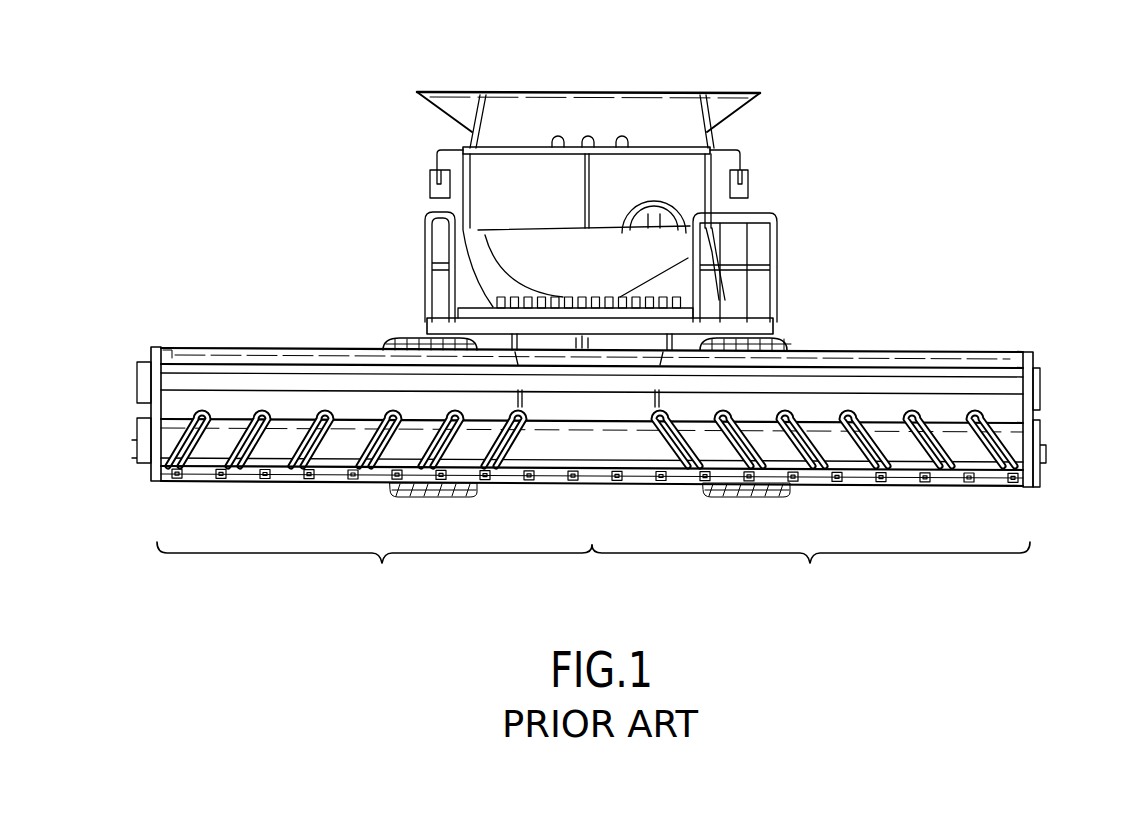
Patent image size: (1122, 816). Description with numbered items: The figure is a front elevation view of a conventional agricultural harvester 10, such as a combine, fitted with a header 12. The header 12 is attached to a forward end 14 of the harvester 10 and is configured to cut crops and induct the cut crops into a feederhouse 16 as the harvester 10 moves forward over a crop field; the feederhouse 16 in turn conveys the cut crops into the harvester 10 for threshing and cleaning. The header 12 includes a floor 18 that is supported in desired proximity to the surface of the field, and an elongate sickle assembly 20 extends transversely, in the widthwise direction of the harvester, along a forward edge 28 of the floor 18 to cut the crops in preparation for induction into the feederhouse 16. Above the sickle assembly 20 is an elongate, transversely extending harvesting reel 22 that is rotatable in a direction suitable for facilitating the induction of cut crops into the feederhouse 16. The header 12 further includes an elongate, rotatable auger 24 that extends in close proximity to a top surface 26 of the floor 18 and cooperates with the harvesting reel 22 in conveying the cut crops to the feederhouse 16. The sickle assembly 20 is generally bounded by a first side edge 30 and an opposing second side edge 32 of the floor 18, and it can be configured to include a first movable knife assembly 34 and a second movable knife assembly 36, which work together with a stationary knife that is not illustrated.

The agricultural harvester 10 is at (275, 108).
The header 12 is at (136, 384).
The forward end 14 is at (435, 327).
The feederhouse 16 is at (672, 343).
The floor 18 is at (273, 465).
The sickle assembly 20 is at (925, 487).
The harvesting reel 22 is at (1028, 358).
The auger 24 is at (1007, 420).
The top surface 26 is at (210, 463).
The forward edge 28 is at (335, 477).
The first side edge 30 is at (147, 466).
The second side edge 32 is at (1040, 470).
The first movable knife assembly 34 is at (374, 570).
The second movable knife assembly 36 is at (811, 570).